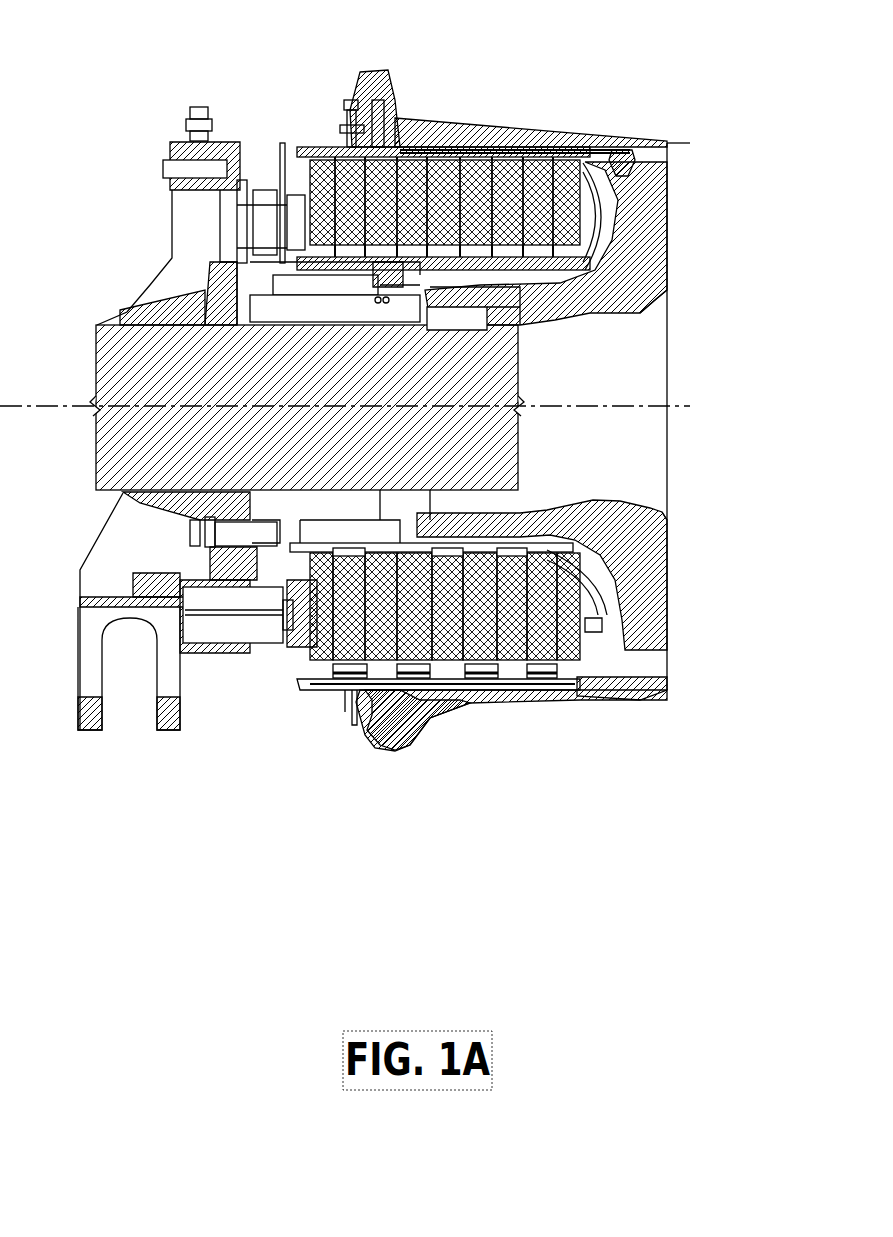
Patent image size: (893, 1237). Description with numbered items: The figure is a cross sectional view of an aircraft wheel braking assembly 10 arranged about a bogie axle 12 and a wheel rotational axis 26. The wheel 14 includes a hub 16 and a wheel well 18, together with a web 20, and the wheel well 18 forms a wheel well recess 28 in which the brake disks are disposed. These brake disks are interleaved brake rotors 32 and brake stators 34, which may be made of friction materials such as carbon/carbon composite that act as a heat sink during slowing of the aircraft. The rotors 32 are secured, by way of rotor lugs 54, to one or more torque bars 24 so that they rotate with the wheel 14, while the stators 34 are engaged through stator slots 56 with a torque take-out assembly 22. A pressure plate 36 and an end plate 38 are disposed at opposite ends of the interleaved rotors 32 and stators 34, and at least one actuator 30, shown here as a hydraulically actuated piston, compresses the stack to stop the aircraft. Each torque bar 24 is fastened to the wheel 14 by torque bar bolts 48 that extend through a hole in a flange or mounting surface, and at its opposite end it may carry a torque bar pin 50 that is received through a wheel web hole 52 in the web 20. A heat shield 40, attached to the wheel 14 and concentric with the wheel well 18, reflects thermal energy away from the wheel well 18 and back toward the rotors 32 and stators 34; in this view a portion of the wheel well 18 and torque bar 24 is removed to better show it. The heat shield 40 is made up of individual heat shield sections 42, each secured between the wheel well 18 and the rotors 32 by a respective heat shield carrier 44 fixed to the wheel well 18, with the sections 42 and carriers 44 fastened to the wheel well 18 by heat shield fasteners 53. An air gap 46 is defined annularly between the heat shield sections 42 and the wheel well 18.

The wheel braking assembly 10 is at (700, 97).
The bogie axle 12 is at (75, 363).
The wheel 14 is at (537, 118).
The hub 16 is at (510, 308).
The wheel well 18 is at (660, 143).
The web 20 is at (653, 217).
The torque take-out assembly 22 is at (258, 216).
The torque bar 24 is at (282, 140).
The wheel rotational axis 26 is at (572, 404).
The wheel well recess 28 is at (618, 210).
The actuator 30 is at (225, 658).
The brake rotor 32 is at (445, 410).
The brake stator 34 is at (446, 410).
The pressure plate 36 is at (322, 410).
The end plate 38 is at (566, 410).
The heat shield 40 is at (322, 708).
The heat shield section 42 is at (482, 147).
The heat shield carrier 44 is at (368, 695).
The air gap 46 is at (380, 113).
The torque bar bolt 48 is at (350, 100).
The torque bar pin 50 is at (613, 150).
The wheel web hole 52 is at (667, 182).
The heat shield fastener 53 is at (357, 707).
The rotor lug 54 is at (380, 128).
The stator slot 56 is at (355, 281).